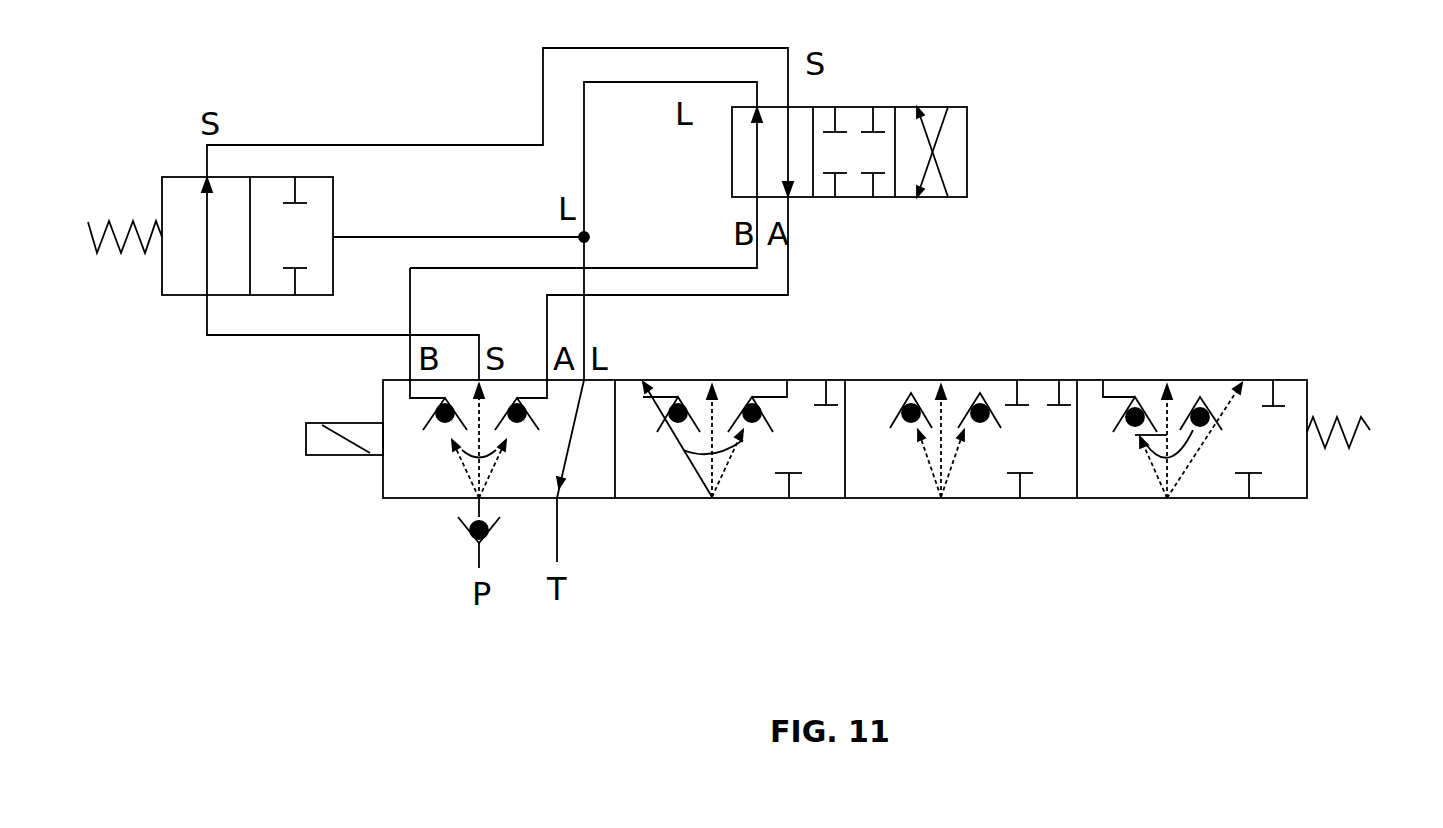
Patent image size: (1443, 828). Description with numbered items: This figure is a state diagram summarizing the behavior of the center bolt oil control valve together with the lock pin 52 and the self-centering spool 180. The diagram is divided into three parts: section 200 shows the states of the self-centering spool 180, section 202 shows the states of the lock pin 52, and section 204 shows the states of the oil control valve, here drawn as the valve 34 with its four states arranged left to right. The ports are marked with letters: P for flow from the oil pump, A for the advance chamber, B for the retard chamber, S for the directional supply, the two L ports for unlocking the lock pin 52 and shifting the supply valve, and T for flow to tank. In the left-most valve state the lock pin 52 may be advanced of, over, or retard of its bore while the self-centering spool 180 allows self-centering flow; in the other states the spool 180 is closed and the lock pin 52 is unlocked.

The directional control valve 34 is at (871, 442).
The lock pin 52 is at (983, 152).
The self-centering spool 180 is at (172, 298).
The section of state diagram 200 is at (196, 235).
The section of state diagram 202 is at (910, 103).
The section of the state diagram 204 is at (1323, 513).